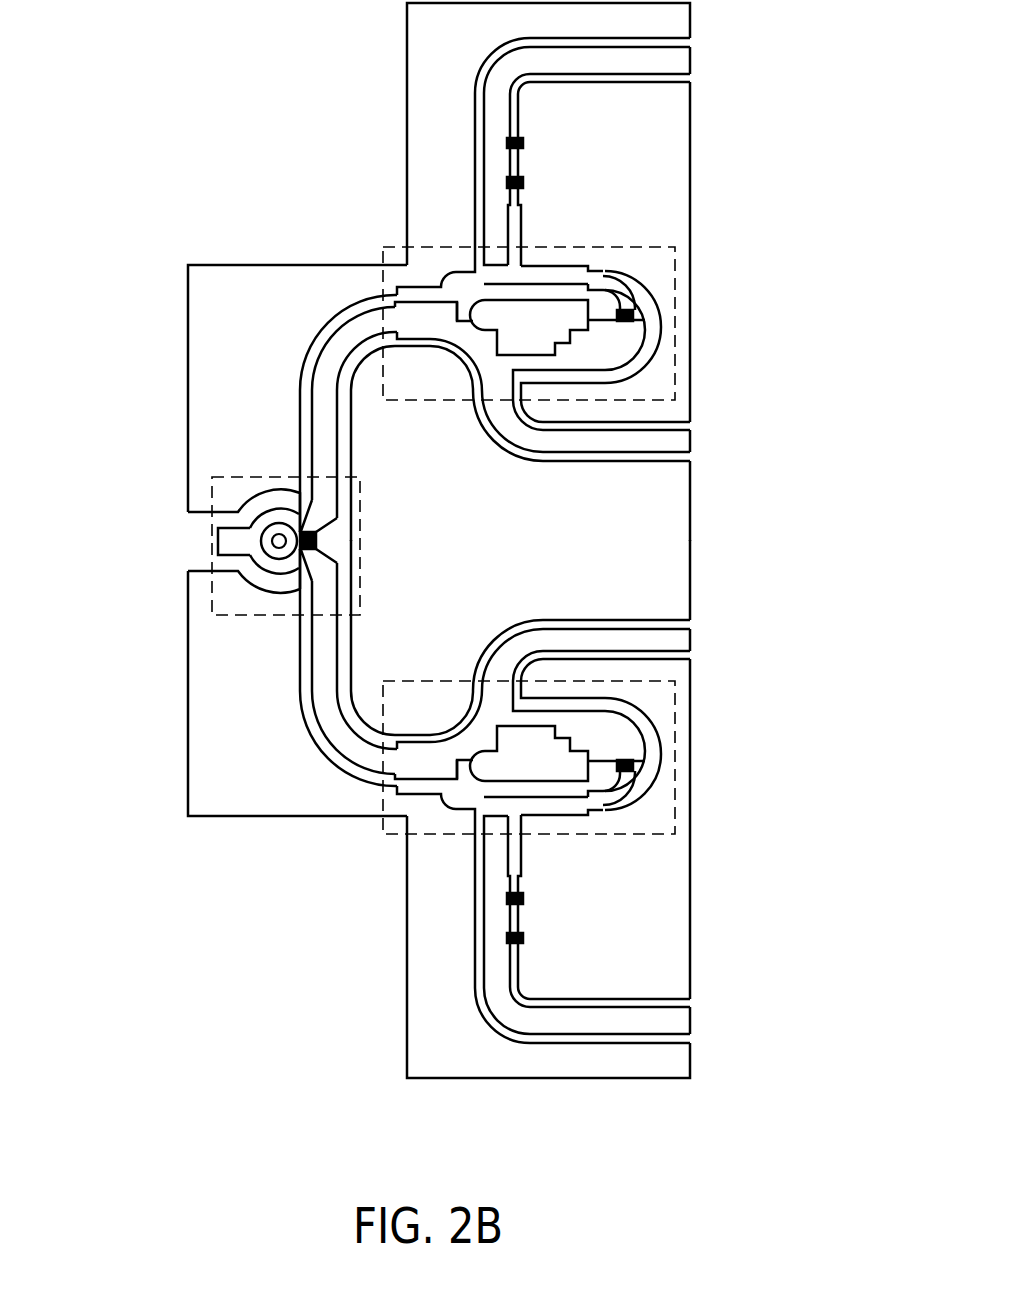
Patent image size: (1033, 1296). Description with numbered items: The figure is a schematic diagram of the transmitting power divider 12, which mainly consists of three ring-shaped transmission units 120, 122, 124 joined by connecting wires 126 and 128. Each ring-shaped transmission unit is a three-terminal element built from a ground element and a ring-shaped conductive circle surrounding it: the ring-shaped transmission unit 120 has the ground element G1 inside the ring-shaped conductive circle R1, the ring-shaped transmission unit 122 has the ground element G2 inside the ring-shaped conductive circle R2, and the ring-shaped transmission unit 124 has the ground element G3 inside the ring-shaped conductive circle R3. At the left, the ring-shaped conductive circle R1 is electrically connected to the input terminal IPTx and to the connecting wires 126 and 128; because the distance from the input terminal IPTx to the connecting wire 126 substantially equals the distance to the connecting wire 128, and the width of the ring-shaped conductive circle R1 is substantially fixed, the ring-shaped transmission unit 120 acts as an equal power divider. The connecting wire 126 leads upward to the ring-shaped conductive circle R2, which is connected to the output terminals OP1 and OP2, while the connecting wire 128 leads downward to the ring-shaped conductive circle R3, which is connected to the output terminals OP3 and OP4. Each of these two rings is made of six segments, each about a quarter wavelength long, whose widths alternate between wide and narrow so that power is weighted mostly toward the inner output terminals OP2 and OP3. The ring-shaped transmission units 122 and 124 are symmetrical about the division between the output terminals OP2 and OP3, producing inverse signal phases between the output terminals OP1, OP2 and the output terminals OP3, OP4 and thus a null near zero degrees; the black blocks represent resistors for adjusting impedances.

The transmitting power divider 12 is at (163, 56).
The output terminal OP1 is at (613, 121).
The output terminal OP2 is at (675, 441).
The output terminal OP3 is at (675, 639).
The output terminal OP4 is at (613, 959).
The input terminal IPTx is at (187, 542).
The ring-shaped conductive circle R1 is at (239, 539).
The ring-shaped conductive circle R2 is at (636, 310).
The ring-shaped conductive circle R3 is at (636, 771).
The ground element G1 is at (282, 544).
The ground element G2 is at (487, 315).
The ground element G3 is at (487, 766).
The ring-shaped transmission unit 120 is at (212, 615).
The ring-shaped transmission unit 122 is at (395, 247).
The ring-shaped transmission unit 124 is at (395, 834).
The connecting wire 126 is at (322, 425).
The connecting wire 128 is at (325, 690).